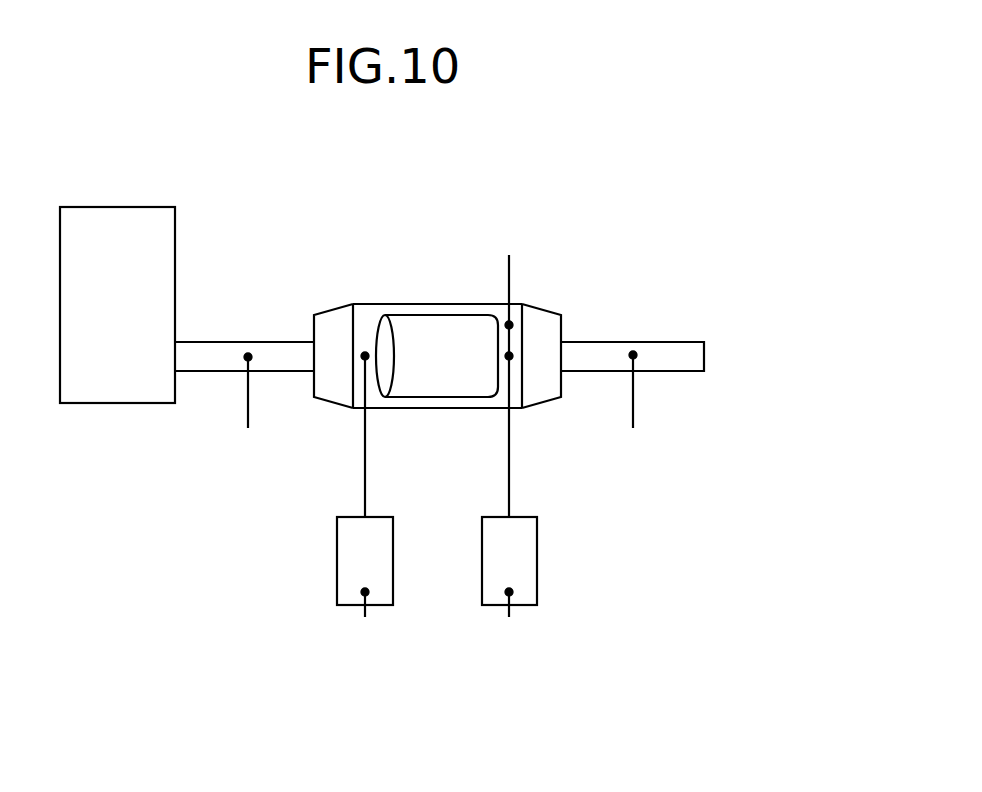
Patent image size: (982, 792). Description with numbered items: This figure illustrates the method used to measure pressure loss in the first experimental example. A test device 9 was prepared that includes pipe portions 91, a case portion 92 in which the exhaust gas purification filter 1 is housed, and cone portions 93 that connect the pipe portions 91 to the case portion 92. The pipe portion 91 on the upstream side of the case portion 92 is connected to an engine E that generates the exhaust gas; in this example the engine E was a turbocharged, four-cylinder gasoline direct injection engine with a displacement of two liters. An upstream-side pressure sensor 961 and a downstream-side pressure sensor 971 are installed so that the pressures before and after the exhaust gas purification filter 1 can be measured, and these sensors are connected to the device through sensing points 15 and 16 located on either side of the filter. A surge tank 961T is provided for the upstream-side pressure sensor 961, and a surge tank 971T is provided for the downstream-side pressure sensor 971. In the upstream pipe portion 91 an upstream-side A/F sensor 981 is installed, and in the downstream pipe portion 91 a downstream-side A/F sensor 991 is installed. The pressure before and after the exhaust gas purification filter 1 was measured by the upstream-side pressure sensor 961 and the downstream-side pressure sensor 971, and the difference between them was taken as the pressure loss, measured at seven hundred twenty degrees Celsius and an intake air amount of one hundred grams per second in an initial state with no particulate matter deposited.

The engine E is at (115, 207).
The pipe portion 91 is at (230, 342).
The test device 9 is at (588, 268).
The case portion 92 is at (442, 304).
The cone portion 93 is at (337, 392).
The exhaust gas purification filter 1 is at (473, 380).
The first terminal 15 is at (386, 352).
The second terminal 16 is at (505, 344).
The upstream-side A/F sensor 981 is at (244, 413).
The downstream-side A/F sensor 991 is at (637, 413).
The surge tank for the upstream-side pressure sensor 961T is at (360, 548).
The surge tank for the downstream-side pressure sensor 971T is at (513, 550).
The upstream-side pressure sensor 961 is at (370, 610).
The downstream-side pressure sensor 971 is at (512, 610).